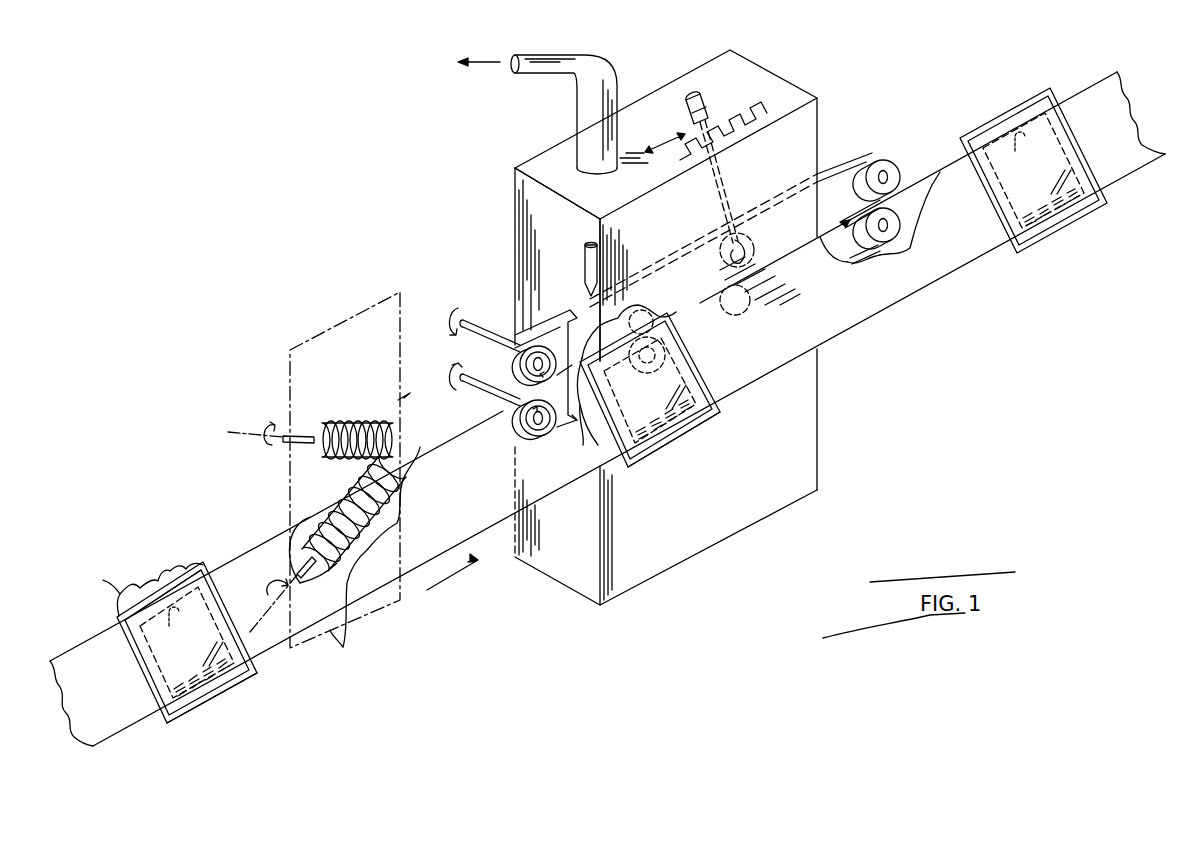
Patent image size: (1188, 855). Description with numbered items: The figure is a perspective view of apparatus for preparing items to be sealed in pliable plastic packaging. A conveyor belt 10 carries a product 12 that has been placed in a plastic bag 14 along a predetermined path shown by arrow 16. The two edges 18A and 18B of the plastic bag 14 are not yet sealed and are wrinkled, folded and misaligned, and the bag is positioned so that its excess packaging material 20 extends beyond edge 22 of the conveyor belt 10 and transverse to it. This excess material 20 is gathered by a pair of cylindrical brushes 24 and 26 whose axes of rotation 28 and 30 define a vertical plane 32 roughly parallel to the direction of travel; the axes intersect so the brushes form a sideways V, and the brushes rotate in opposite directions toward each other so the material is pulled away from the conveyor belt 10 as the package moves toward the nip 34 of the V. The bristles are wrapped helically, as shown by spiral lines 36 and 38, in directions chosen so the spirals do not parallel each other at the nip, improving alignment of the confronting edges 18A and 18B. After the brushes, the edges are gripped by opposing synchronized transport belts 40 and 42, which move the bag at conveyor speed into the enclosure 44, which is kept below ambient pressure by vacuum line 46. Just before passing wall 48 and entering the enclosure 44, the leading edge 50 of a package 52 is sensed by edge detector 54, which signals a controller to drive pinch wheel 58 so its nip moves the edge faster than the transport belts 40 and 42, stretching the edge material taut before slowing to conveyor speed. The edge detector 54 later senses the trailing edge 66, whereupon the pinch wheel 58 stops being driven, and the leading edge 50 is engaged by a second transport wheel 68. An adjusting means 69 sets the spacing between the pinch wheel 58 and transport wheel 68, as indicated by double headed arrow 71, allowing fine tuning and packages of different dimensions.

The conveyor belt 10 is at (78, 649).
The product 12 is at (197, 677).
The plastic bag 14 is at (167, 718).
The arrow 16 is at (433, 590).
The edge 18A is at (162, 578).
The edge 18B is at (112, 586).
The excess packaging material 20 is at (188, 573).
The edge of conveyor belt 22 is at (937, 174).
The cylindrical brush 24 is at (400, 408).
The cylindrical brush 26 is at (396, 484).
The axis of rotation 28 is at (245, 432).
The axis of rotation 30 is at (255, 640).
The vertical plane 32 is at (398, 304).
The nip 34 is at (364, 467).
The spiral line 36 is at (320, 426).
The spiral line 38 is at (343, 622).
The transport belt 40 is at (515, 296).
The transport belt 42 is at (513, 553).
The enclosure 44 is at (790, 492).
The vacuum line 46 is at (577, 108).
The wall 48 is at (527, 203).
The leading edge 50 is at (722, 395).
The package 52 is at (632, 470).
The edge detector 54 is at (582, 268).
The pinch wheel 58 is at (673, 287).
The trailing edge 66 is at (560, 420).
The transport wheel 68 is at (777, 212).
The adjusting means 69 is at (708, 108).
The double headed arrow 71 is at (643, 130).